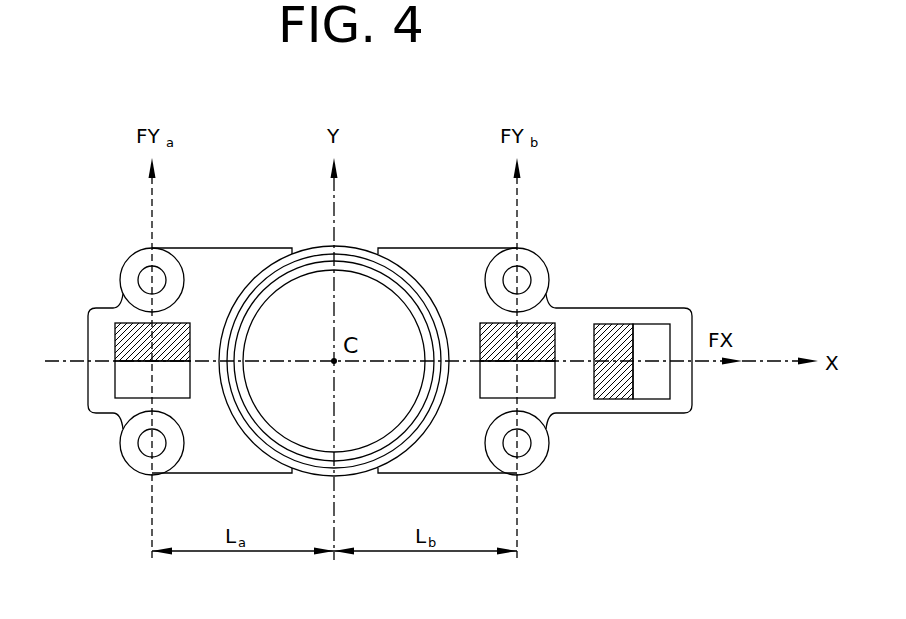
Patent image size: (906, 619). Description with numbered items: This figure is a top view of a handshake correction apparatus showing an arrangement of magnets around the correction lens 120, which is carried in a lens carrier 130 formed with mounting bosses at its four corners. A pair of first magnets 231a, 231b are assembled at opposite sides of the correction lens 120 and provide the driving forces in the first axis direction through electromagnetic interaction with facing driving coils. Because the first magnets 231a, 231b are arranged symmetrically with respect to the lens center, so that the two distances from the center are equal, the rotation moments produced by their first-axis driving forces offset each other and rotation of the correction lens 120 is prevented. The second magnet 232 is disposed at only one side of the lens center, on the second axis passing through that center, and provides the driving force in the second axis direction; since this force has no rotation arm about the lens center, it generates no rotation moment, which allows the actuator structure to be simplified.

The correction lens 120 is at (356, 302).
The housing 130 is at (453, 273).
The first magnet 231a is at (127, 388).
The first magnet 231b is at (540, 387).
The second magnet 232 is at (651, 385).